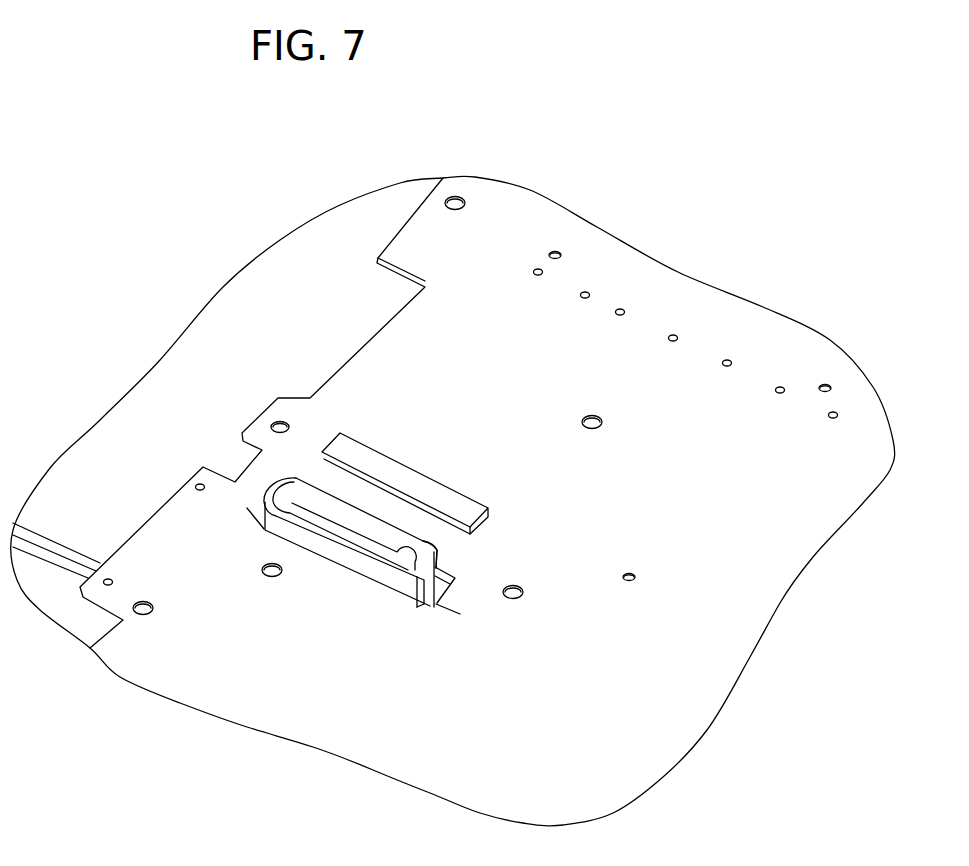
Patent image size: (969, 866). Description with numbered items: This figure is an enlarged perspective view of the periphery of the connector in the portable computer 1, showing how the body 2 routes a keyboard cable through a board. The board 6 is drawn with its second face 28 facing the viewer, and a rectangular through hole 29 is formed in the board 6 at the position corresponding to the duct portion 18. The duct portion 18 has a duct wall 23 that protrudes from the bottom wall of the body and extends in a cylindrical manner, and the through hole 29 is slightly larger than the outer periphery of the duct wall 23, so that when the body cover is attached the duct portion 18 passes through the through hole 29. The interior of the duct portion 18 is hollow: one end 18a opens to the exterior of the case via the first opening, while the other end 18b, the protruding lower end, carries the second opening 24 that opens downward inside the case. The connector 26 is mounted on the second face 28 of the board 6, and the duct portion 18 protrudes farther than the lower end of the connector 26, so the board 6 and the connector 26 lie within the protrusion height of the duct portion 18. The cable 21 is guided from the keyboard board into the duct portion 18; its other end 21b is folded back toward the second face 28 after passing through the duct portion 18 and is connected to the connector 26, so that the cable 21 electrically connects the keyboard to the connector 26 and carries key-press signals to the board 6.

The portable computer 1 is at (91, 138).
The body 2 is at (222, 285).
The board 6 is at (699, 362).
The duct portion 18 is at (328, 551).
The one end of duct portion 18a is at (437, 602).
The other end of duct portion 18b is at (437, 549).
The cable 21 is at (316, 470).
The other end of cable 21b is at (415, 512).
The duct wall 23 is at (368, 572).
The second opening 24 is at (415, 602).
The connector 26 is at (393, 467).
The second face 28 is at (747, 578).
The through hole 29 is at (246, 508).